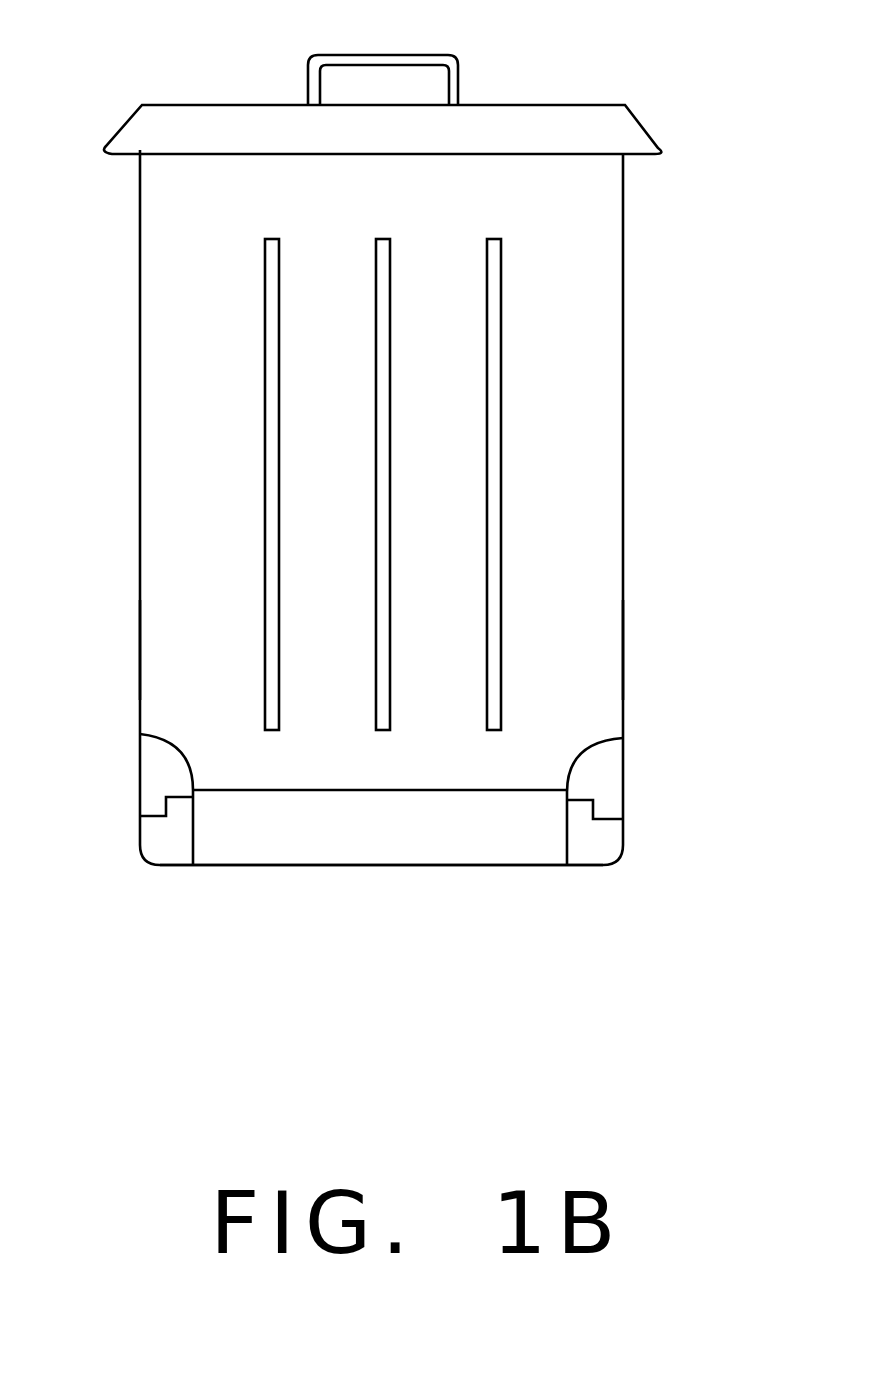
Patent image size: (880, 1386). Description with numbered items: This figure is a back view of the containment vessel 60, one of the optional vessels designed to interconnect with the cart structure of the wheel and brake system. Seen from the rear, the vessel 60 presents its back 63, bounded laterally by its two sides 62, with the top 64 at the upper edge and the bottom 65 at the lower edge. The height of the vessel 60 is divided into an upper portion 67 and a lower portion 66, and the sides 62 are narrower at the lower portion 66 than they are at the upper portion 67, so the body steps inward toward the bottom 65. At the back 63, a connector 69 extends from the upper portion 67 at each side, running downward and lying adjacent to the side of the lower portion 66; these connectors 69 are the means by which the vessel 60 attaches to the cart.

The containment vessel 60 is at (598, 522).
The sides 62 is at (130, 390).
The back 63 is at (598, 218).
The top 64 is at (541, 105).
The bottom 65 is at (433, 868).
The lower portion 66 is at (136, 842).
The upper portion 67 is at (140, 637).
The connector 69 is at (165, 767).